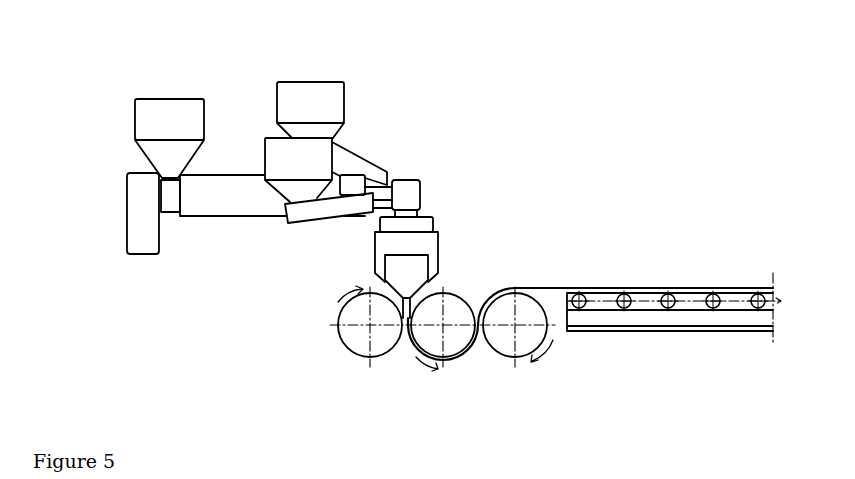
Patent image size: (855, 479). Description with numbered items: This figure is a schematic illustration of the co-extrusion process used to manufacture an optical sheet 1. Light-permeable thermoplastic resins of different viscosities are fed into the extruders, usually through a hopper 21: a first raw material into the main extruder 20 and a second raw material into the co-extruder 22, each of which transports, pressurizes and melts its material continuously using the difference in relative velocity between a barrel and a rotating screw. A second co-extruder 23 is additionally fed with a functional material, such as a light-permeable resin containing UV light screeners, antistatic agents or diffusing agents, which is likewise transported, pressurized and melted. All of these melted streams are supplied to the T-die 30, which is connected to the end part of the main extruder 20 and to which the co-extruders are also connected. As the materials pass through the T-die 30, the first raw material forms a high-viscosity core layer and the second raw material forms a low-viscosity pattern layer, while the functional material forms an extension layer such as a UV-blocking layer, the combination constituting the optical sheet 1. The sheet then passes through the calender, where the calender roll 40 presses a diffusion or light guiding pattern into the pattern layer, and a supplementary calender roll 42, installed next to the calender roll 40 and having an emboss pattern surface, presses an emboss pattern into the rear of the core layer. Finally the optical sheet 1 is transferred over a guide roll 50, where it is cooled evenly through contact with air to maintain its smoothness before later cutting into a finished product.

The optical sheet 1 is at (653, 287).
The main extruder 20 is at (222, 213).
The hoppers 21 is at (290, 81).
The co-extruder 22 is at (365, 167).
The second co-extruder 23 is at (322, 215).
The T-die 30 is at (433, 243).
The calender roll 40 is at (502, 355).
The supplementary calender roll 42 is at (362, 355).
The guide roll 50 is at (753, 290).